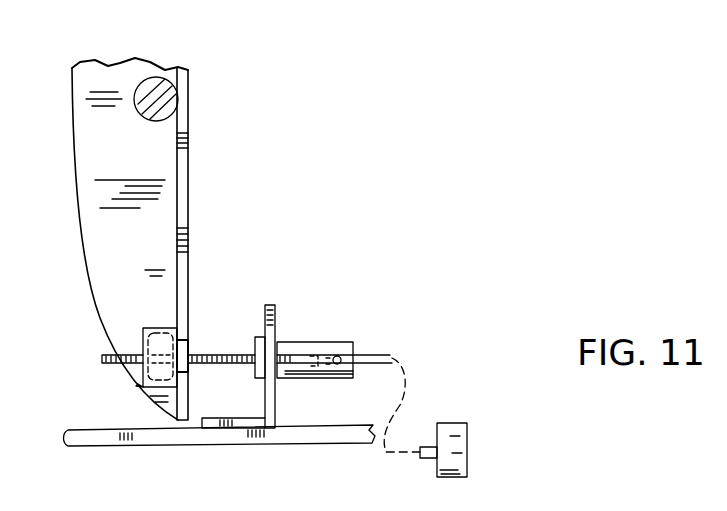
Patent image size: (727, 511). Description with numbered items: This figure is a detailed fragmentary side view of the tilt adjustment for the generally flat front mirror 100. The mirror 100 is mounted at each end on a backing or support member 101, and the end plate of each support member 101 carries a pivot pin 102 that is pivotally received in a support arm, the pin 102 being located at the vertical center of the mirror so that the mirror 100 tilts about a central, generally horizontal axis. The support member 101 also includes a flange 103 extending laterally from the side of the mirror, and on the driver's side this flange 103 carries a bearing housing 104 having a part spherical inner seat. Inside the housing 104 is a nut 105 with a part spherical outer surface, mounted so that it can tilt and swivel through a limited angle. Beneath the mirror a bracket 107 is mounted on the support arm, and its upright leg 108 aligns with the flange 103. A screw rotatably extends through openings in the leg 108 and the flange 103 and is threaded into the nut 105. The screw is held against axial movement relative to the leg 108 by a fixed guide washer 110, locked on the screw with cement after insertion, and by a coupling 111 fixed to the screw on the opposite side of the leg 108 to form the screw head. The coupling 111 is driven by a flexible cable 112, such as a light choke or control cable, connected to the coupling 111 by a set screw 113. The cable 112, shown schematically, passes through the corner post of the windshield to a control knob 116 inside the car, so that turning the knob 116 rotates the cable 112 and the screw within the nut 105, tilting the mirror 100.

The flat front mirror 100 is at (120, 75).
The support member 101 is at (100, 237).
The pivot pin 102 is at (160, 114).
The flange 103 is at (188, 210).
The bearing housing 104 is at (157, 328).
The part spherical nut 105 is at (138, 386).
The bracket 107 is at (276, 408).
The upright leg 108 is at (267, 305).
The guide washer 110 is at (257, 338).
The coupling 111 is at (293, 342).
The flexible cable 112 is at (392, 355).
The set screw 113 is at (340, 356).
The control knob 116 is at (462, 425).